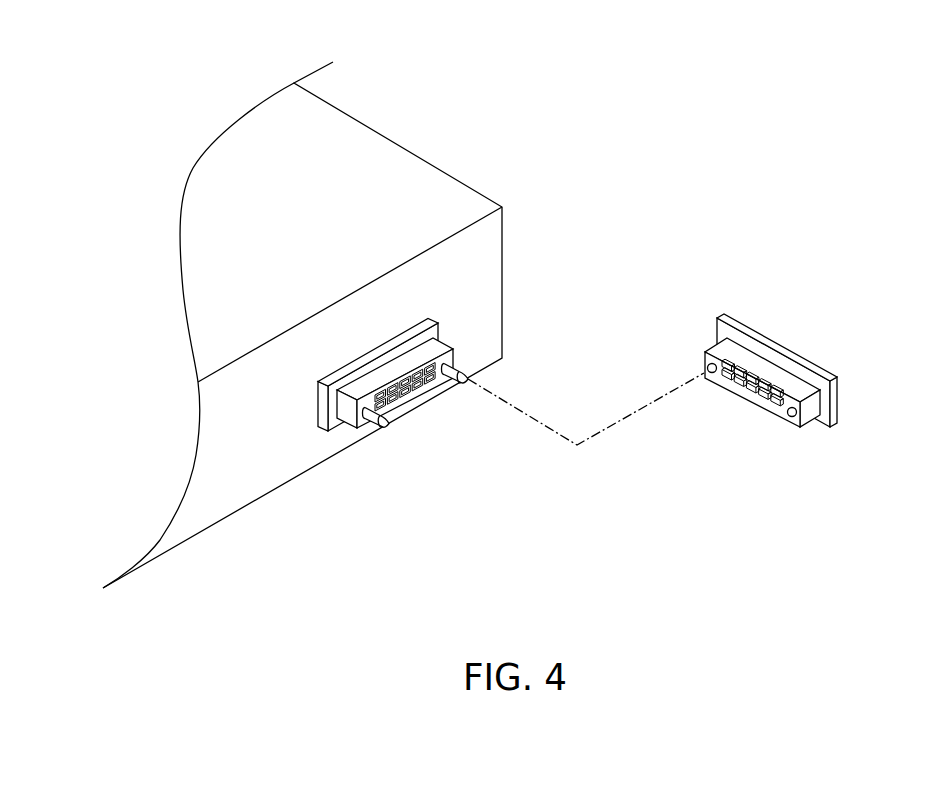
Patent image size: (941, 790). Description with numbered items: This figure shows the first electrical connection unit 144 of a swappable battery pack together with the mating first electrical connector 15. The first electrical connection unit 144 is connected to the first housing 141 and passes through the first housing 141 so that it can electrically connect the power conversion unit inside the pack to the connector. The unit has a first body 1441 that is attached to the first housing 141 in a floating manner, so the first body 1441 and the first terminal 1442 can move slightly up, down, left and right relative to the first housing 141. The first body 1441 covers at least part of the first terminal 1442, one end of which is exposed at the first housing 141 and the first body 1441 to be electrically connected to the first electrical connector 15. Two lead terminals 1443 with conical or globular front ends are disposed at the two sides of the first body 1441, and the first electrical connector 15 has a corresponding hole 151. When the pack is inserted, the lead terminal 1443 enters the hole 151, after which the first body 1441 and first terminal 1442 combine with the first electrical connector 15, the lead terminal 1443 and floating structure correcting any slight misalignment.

The first housing 141 is at (398, 145).
The first electrical connection unit 144 is at (392, 335).
The first body 1441 is at (445, 350).
The first terminal 1442 is at (421, 389).
The lead terminal 1443 is at (379, 423).
The first electrical connector 15 is at (789, 352).
The hole 151 is at (790, 418).